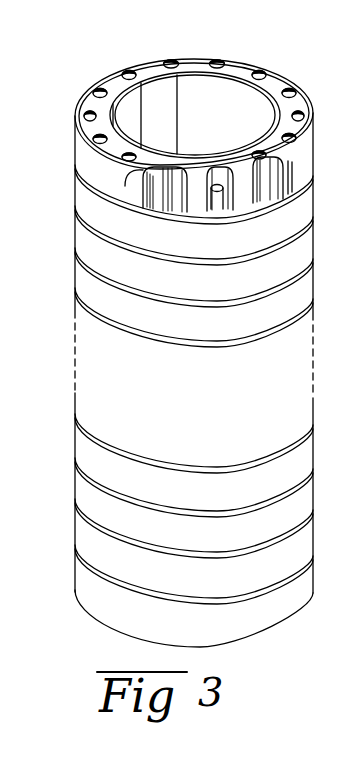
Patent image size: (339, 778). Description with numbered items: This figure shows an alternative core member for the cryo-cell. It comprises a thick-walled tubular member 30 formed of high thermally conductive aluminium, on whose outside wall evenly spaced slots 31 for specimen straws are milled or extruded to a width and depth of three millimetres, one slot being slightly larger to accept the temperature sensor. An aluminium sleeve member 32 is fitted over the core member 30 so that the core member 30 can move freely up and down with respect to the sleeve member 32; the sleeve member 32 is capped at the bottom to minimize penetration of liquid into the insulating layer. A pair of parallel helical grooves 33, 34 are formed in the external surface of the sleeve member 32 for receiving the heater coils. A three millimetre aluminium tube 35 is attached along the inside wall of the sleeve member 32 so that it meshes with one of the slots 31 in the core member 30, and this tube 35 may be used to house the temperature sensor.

The tubular member 30 is at (160, 76).
The slots 31 is at (173, 190).
The sleeve member 32 is at (110, 300).
The helical groove 33 is at (133, 211).
The helical groove 34 is at (130, 250).
The aluminium tube 35 is at (218, 195).